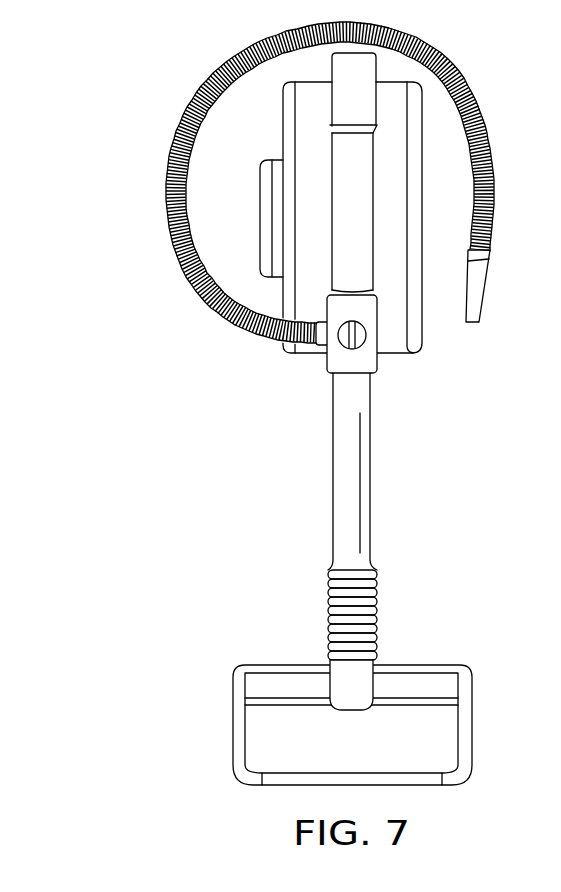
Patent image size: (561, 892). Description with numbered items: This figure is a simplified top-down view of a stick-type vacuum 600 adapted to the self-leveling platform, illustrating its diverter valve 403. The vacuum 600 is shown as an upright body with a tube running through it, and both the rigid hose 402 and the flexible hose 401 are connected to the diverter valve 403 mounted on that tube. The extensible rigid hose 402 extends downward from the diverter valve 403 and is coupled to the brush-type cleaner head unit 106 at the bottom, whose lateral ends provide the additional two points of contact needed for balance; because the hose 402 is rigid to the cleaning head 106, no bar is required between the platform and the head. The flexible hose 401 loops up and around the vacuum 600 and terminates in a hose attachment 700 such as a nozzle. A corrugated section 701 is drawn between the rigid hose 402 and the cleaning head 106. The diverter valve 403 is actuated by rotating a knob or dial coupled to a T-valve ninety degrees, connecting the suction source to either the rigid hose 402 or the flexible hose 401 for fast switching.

The cleaner head unit 106 is at (233, 715).
The flexible hose 401 is at (194, 105).
The rigid hose 402 is at (370, 470).
The diverter valve 403 is at (327, 358).
The stick-type vacuum 600 is at (406, 361).
The hose attachment 700 is at (486, 296).
The flexible corrugated section 701 is at (377, 612).